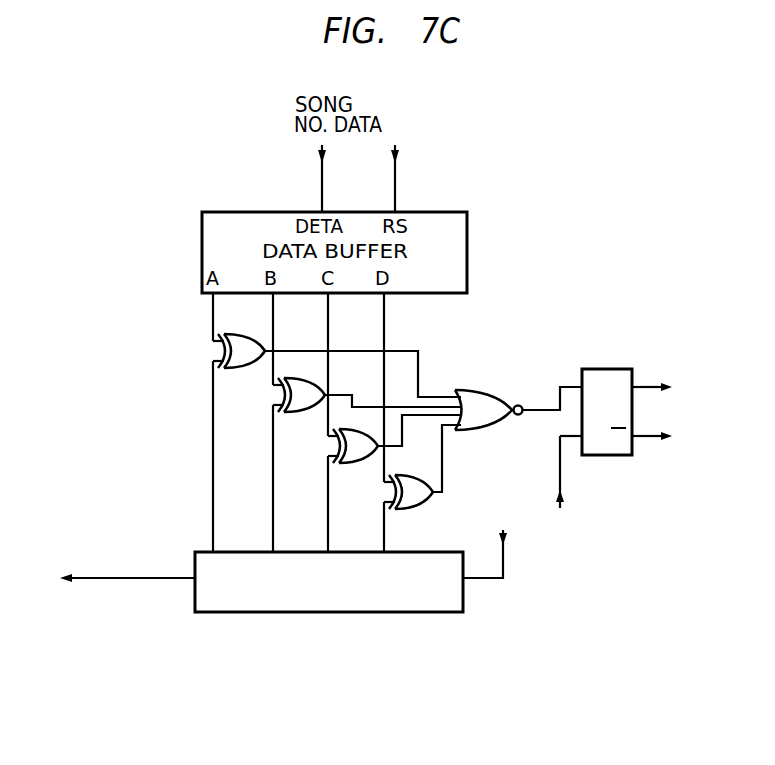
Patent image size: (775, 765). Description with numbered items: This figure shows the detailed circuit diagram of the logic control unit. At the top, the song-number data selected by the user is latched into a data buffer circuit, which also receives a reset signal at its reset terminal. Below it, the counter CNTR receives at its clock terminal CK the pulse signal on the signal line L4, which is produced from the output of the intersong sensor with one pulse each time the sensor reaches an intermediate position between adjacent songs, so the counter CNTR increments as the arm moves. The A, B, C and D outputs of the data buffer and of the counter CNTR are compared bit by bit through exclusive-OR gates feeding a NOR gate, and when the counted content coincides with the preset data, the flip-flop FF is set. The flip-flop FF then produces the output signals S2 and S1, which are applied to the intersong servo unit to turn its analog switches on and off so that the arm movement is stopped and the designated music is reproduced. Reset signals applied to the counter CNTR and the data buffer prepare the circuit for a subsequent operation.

The flip-flop FF is at (605, 455).
The signal S2 is at (682, 394).
The signal S1 is at (682, 442).
The counter CNTR is at (351, 571).
The signal line L4 is at (112, 579).